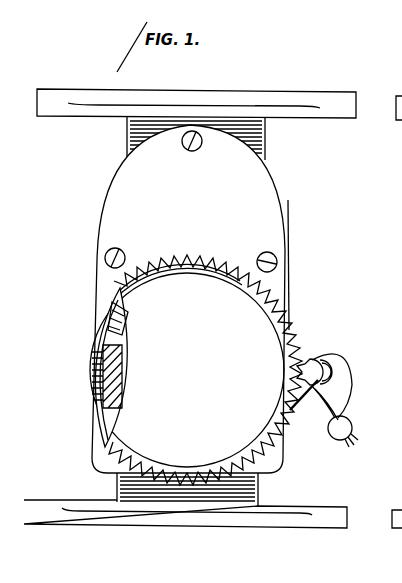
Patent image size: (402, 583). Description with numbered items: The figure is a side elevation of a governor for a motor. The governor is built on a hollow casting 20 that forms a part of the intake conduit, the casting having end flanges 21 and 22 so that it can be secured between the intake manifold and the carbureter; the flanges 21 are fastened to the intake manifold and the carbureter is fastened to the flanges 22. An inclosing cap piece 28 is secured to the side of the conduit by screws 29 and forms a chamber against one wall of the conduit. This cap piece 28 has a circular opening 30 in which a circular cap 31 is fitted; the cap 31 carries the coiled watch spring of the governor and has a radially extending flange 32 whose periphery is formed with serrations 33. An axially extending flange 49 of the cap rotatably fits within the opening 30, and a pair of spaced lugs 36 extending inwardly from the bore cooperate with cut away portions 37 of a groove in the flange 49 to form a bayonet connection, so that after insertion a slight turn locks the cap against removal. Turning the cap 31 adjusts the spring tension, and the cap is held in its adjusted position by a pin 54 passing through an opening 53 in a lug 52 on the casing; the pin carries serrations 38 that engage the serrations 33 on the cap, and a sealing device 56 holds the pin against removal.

The hollow casting 20 is at (270, 137).
The end flange 21 is at (288, 97).
The end flange 22 is at (246, 522).
The cap piece 28 is at (120, 197).
The screws 29 is at (193, 152).
The circular opening 30 is at (185, 370).
The circular cap 31 is at (140, 420).
The radially extending flange 32 is at (115, 293).
The serrations 33 is at (287, 296).
The lugs 36 is at (98, 385).
The cut away portions 37 is at (108, 312).
The serrations 38 is at (300, 377).
The axially extending flange 49 is at (123, 378).
The lug 52 is at (308, 350).
The opening 53 is at (326, 364).
The pin 54 is at (322, 380).
The sealing device 56 is at (352, 425).